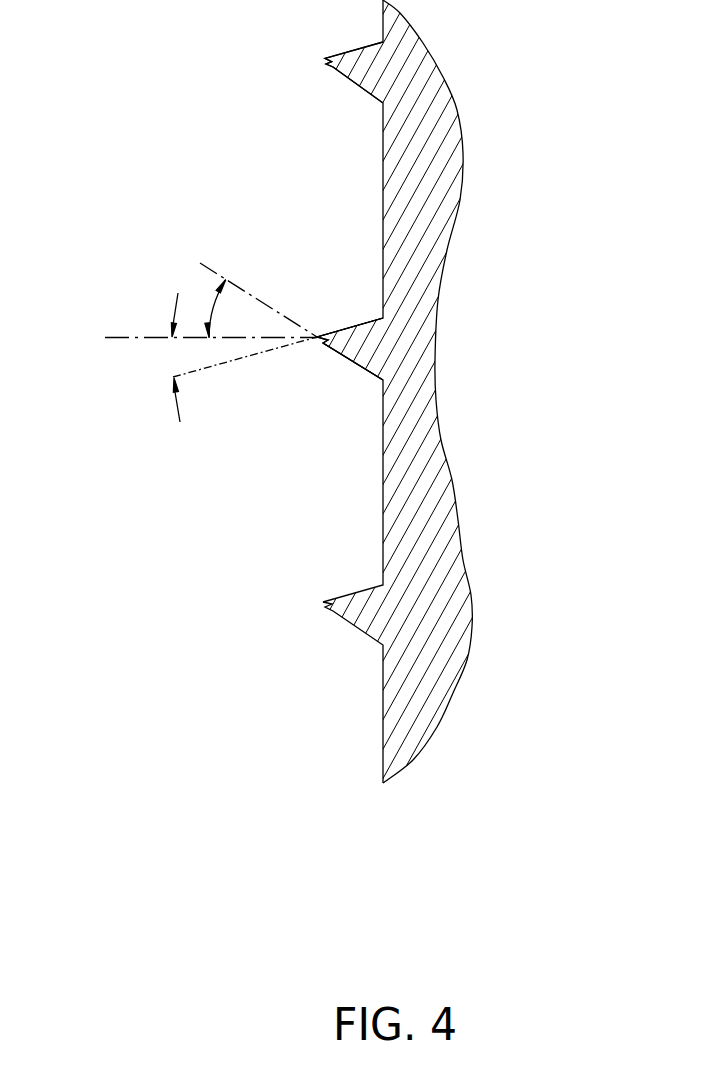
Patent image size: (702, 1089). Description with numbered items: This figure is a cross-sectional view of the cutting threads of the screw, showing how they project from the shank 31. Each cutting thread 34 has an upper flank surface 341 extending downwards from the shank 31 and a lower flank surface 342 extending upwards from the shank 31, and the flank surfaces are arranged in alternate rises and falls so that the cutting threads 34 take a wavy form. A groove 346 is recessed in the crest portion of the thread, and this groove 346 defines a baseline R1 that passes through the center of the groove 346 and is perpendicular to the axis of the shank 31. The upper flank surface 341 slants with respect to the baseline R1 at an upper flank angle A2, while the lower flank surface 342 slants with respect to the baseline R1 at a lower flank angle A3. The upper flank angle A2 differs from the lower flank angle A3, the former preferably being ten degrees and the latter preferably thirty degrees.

The shank 31 is at (455, 155).
The cutting thread 34 is at (305, 282).
The upper flank surface 341 is at (362, 321).
The lower flank surface 342 is at (352, 362).
The groove 346 is at (308, 59).
The baseline R1 is at (191, 339).
The upper flank angle A2 is at (242, 375).
The lower flank angle A3 is at (258, 300).